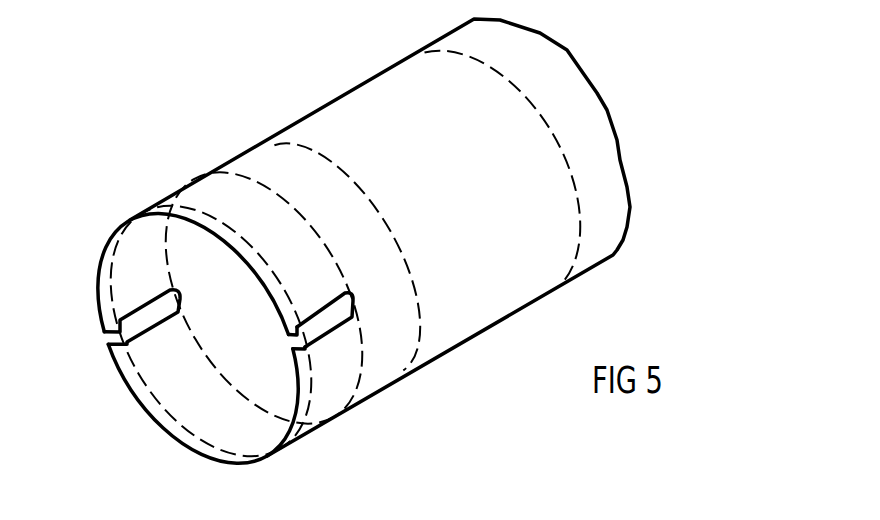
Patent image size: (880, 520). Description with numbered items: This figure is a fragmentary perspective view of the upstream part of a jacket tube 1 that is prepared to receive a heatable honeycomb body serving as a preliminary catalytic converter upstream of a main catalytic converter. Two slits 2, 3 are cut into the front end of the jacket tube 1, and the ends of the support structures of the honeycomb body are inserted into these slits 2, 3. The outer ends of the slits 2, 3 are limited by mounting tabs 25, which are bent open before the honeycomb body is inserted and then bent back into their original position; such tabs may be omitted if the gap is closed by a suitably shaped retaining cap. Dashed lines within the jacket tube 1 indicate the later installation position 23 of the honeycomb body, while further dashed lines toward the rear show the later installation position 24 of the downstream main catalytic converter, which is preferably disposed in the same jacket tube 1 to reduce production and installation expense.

The jacket tube 1 is at (250, 152).
The slit 2 is at (146, 328).
The slit 3 is at (318, 326).
The installation position of honeycomb body 23 is at (217, 203).
The installation position of main catalytic converter 24 is at (407, 107).
The mounting tabs 25 is at (296, 347).